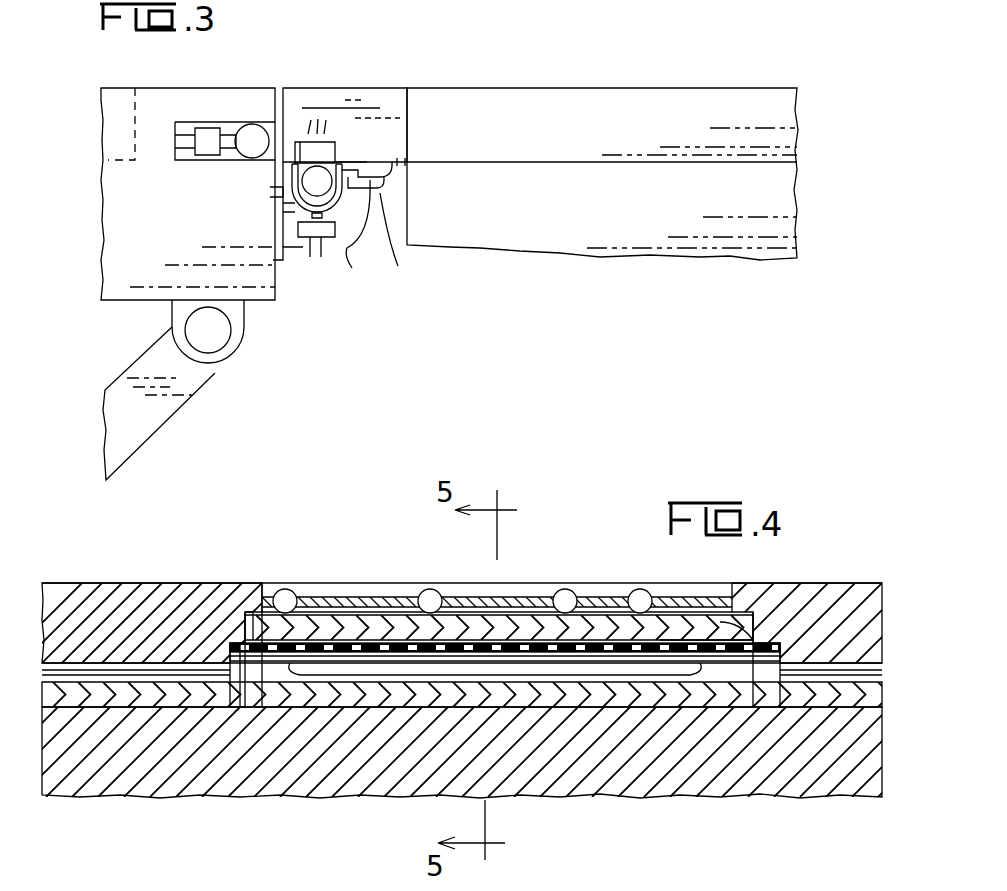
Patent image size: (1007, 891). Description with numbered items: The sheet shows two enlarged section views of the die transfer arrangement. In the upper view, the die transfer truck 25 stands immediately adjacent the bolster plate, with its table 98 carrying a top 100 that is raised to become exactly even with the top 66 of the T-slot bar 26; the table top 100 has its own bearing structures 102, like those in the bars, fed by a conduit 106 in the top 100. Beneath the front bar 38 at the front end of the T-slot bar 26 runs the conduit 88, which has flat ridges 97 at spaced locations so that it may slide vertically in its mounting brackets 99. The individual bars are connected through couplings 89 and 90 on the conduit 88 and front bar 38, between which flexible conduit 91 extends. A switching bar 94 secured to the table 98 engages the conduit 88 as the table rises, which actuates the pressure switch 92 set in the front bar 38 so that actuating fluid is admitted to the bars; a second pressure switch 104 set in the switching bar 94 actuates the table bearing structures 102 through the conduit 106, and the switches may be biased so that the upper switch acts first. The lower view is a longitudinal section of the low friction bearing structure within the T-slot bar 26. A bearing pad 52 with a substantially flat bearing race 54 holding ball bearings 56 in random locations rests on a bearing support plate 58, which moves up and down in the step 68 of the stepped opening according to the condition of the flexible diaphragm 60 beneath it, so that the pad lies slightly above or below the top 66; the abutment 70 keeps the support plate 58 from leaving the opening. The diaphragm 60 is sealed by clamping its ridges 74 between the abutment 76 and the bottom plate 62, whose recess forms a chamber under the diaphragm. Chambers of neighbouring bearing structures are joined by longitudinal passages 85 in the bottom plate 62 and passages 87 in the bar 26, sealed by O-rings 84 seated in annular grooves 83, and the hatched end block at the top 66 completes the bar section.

In FIG. 3, the die transfer truck 25 is at (212, 373).
In FIG. 3, the T-slot bar 26 is at (615, 88).
In FIG. 4, the T-slot bar 26 is at (795, 583).
In FIG. 3, the front bar 38 is at (378, 88).
In FIG. 4, the bearing pad 52 is at (335, 583).
In FIG. 4, the bearing race 54 is at (505, 583).
In FIG. 4, the ball bearings 56 is at (432, 589).
In FIG. 4, the bearing support plate 58 is at (232, 612).
In FIG. 4, the diaphragm 60 is at (473, 655).
In FIG. 4, the bottom plate 62 is at (555, 712).
In FIG. 4, the top of the T-slot bar 66 is at (145, 583).
In FIG. 4, the step 68 is at (706, 632).
In FIG. 4, the abutment 70 is at (265, 628).
In FIG. 4, the ridges 74 is at (258, 690).
In FIG. 4, the abutment 76 is at (232, 690).
In FIG. 4, the annular grooves 83 is at (775, 700).
In FIG. 4, the O-rings 84 is at (790, 649).
In FIG. 4, the longitudinal passages 85 is at (300, 690).
In FIG. 4, the longitudinal passages 87 is at (838, 700).
In FIG. 3, the conduit 88 is at (302, 142).
In FIG. 3, the coupling 89 is at (367, 242).
In FIG. 3, the coupling 90 is at (395, 170).
In FIG. 3, the flexible conduit 91 is at (408, 241).
In FIG. 3, the pressure switch 92 is at (334, 142).
In FIG. 3, the switching bar 94 is at (290, 260).
In FIG. 3, the flat ridges 97 is at (292, 181).
In FIG. 3, the table 98 is at (265, 303).
In FIG. 3, the mounting brackets 99 is at (345, 162).
In FIG. 3, the top of the table 100 is at (183, 88).
In FIG. 3, the bearing structures 102 is at (127, 85).
In FIG. 3, the pressure switch 104 is at (300, 224).
In FIG. 3, the conduit 106 is at (256, 124).